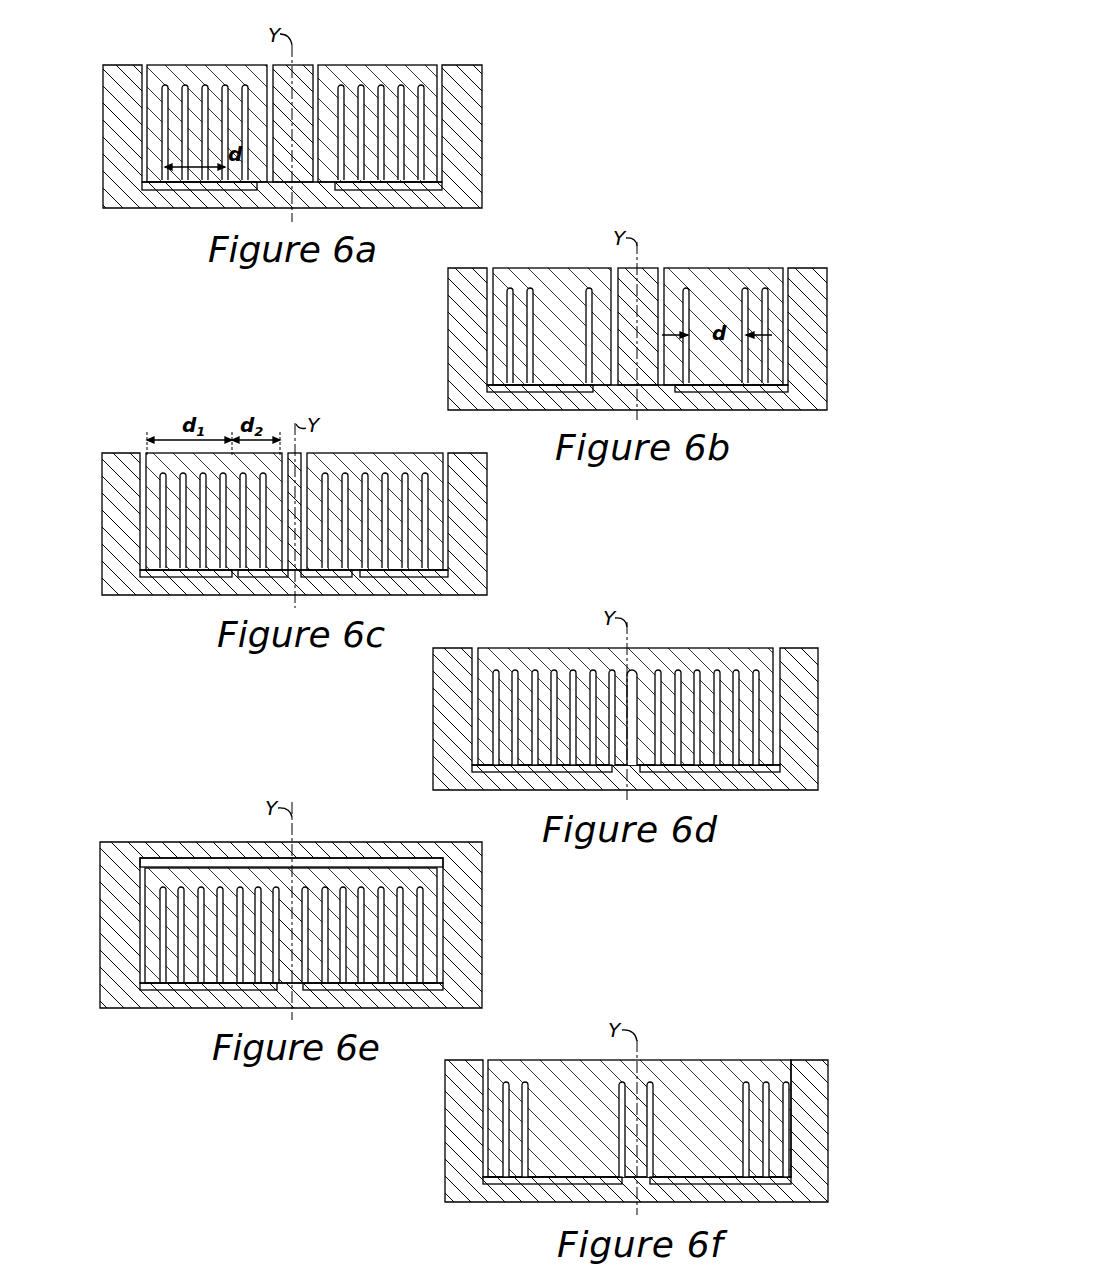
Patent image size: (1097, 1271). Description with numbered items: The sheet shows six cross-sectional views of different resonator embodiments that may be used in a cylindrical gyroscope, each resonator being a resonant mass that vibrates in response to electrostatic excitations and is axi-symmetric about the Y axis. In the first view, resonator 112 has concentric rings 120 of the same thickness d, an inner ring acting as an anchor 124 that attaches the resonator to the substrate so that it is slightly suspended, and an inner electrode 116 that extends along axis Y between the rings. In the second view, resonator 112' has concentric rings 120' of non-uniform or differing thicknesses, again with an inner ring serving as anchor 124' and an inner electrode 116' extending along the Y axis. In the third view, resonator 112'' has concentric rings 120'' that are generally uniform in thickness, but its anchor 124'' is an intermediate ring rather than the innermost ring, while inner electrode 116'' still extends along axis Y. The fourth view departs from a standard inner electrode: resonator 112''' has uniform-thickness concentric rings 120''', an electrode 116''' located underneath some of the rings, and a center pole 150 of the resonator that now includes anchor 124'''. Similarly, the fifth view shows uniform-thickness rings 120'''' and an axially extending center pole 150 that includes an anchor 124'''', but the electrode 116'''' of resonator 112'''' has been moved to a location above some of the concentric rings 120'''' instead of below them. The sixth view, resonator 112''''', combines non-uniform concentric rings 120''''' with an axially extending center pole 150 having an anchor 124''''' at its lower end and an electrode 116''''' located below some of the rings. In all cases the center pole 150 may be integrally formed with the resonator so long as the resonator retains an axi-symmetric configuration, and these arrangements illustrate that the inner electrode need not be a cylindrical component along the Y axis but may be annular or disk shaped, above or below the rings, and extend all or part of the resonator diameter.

In FIG. 6A, the resonator 112 is at (292, 105).
In FIG. 6A, the inner electrode 116 is at (307, 101).
In FIG. 6A, the concentric rings 120 is at (245, 123).
In FIG. 6A, the anchor 124 is at (292, 209).
In FIG. 6B, the resonator 112' is at (637, 301).
In FIG. 6B, the inner electrode 116' is at (675, 311).
In FIG. 6B, the concentric rings 120' is at (638, 303).
In FIG. 6B, the anchor 124' is at (648, 415).
In FIG. 6C, the resonator 112'' is at (281, 478).
In FIG. 6C, the inner electrode 116'' is at (340, 483).
In FIG. 6C, the concentric rings 120'' is at (294, 498).
In FIG. 6C, the anchor 124'' is at (283, 598).
In FIG. 6D, the resonator 112''' is at (643, 676).
In FIG. 6D, the electrode 116''' is at (641, 796).
In FIG. 6D, the concentric rings 120''' is at (640, 686).
In FIG. 6D, the anchor 124''' is at (580, 694).
In FIG. 6D, the center pole 150 is at (628, 678).
In FIG. 6E, the center pole 150 is at (295, 902).
In FIG. 6F, the center pole 150 is at (632, 1090).
In FIG. 6E, the resonator 112'''' is at (277, 874).
In FIG. 6E, the electrode 116'''' is at (291, 836).
In FIG. 6E, the concentric rings 120'''' is at (257, 961).
In FIG. 6E, the anchor 124'''' is at (305, 1012).
In FIG. 6F, the resonator 112''''' is at (636, 1072).
In FIG. 6F, the electrode 116''''' is at (621, 1211).
In FIG. 6F, the concentric rings 120''''' is at (672, 1095).
In FIG. 6F, the anchor 124''''' is at (721, 1203).